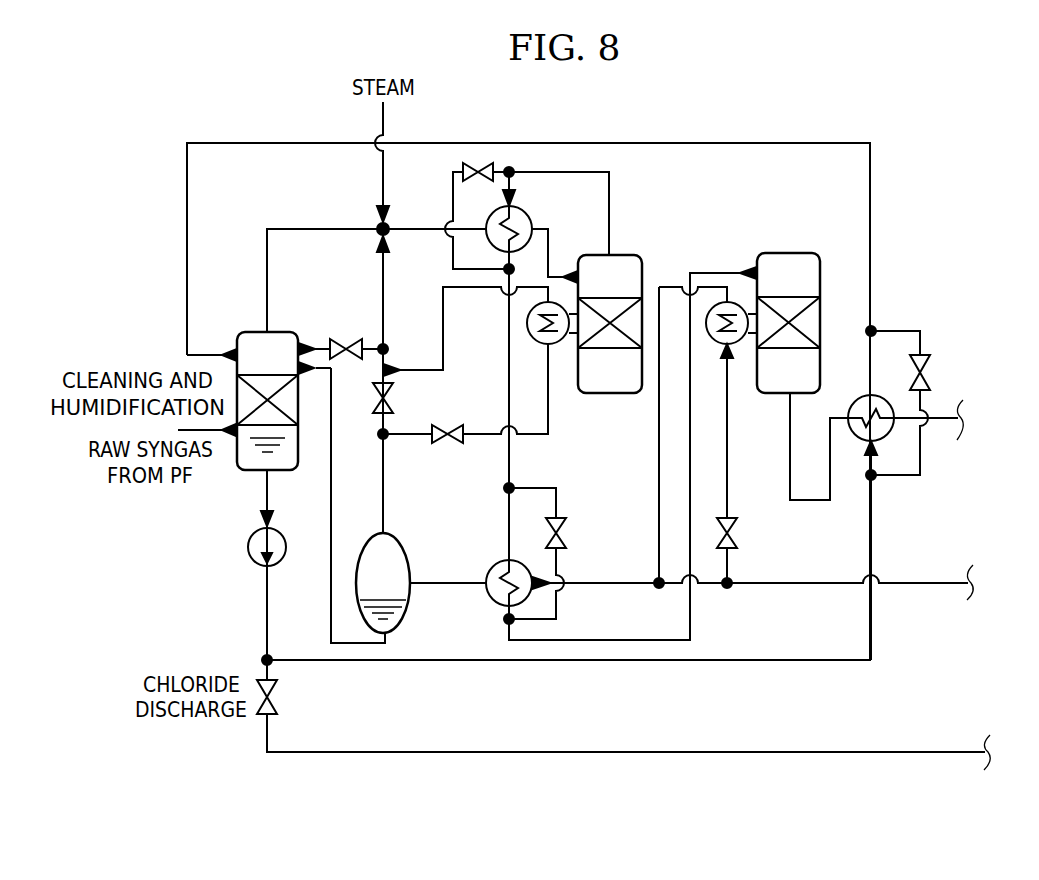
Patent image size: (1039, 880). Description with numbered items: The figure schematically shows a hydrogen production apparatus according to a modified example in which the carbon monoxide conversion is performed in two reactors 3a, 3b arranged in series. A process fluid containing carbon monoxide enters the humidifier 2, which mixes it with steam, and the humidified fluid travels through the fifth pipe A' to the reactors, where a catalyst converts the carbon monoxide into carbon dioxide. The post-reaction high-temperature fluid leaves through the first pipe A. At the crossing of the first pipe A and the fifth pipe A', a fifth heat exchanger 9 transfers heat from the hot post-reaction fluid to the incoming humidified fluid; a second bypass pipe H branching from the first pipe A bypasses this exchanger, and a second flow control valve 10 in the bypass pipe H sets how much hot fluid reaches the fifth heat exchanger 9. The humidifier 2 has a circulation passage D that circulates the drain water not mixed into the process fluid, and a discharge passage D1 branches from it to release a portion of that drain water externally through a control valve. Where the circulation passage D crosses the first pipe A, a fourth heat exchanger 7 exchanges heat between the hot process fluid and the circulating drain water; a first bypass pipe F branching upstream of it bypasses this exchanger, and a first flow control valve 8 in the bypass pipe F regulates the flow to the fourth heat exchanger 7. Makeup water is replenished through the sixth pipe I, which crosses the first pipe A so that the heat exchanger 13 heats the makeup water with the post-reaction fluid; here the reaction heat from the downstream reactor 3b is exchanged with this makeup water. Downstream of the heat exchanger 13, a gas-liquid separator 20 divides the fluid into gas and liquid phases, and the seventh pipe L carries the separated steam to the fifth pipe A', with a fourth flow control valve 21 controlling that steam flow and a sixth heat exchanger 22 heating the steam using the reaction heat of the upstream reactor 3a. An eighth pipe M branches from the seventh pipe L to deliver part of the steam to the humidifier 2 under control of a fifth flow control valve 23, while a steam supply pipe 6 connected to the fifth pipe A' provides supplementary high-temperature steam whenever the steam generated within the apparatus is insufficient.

The humidifier 2 is at (283, 332).
The reactor 3a is at (610, 393).
The reactor 3b is at (790, 253).
The steam supply pipe 6 is at (383, 170).
The fourth heat exchanger 7 is at (856, 440).
The first flow control valve 8 is at (927, 353).
The fifth heat exchanger 9 is at (522, 213).
The second flow control valve 10 is at (463, 170).
The heat exchanger 13 is at (500, 601).
The gas-liquid separator 20 is at (395, 534).
The fourth flow control valve 21 is at (452, 426).
The sixth heat exchanger 22 is at (556, 346).
The fifth flow control valve 23 is at (353, 360).
The first pipe A is at (654, 420).
The fifth pipe A' is at (434, 248).
The circulation passage D is at (187, 266).
The discharge passage D1 is at (267, 725).
The first bypass pipe F is at (907, 479).
The second bypass pipe H is at (453, 205).
The sixth pipe I is at (332, 488).
The seventh pipe L is at (478, 370).
The eighth pipe M is at (340, 349).